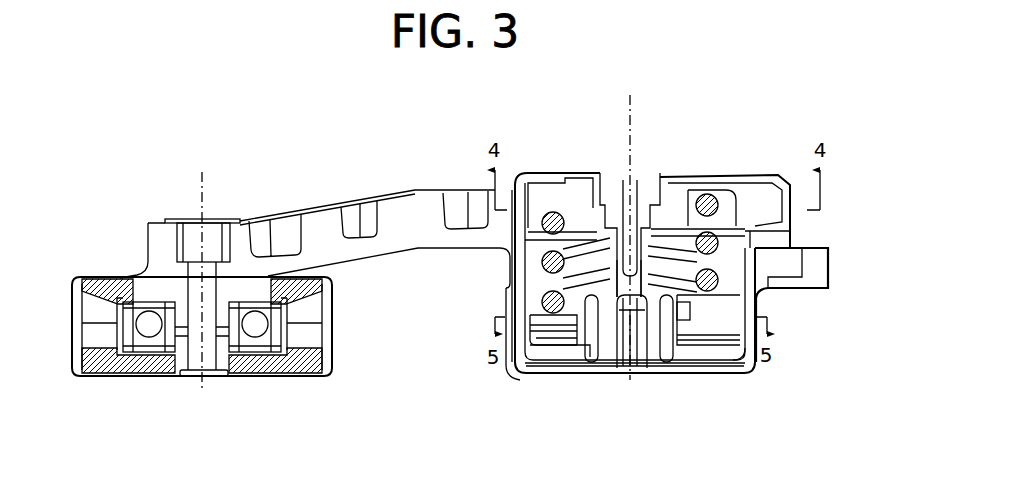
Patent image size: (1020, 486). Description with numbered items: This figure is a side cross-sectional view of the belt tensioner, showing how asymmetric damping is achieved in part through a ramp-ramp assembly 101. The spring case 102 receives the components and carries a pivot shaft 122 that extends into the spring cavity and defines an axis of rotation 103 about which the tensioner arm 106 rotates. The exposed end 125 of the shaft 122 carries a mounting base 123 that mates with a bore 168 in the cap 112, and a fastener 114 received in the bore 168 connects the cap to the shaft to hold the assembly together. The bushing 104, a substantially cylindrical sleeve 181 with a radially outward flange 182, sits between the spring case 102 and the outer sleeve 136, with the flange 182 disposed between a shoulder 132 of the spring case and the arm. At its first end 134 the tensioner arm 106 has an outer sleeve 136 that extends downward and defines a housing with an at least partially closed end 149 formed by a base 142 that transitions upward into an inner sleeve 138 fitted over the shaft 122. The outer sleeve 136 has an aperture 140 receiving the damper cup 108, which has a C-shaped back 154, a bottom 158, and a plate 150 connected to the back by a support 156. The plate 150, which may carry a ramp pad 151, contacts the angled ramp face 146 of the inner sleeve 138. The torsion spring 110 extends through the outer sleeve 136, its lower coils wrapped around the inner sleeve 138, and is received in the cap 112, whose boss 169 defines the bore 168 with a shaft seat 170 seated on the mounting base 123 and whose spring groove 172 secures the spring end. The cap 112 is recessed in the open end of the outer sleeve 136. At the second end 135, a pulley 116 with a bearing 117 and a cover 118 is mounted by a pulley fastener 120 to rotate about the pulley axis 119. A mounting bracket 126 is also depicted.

The ramp-ramp assembly 101 is at (562, 345).
The spring case 102 is at (545, 298).
The axis of rotation 103 is at (631, 100).
The bushing 104 is at (514, 262).
The tensioner arm 106 is at (392, 205).
The damper cup 108 is at (512, 373).
The torsion spring 110 is at (752, 297).
The cap 112 is at (727, 186).
The fastener 114 is at (638, 212).
The pulley 116 is at (85, 345).
The bearing 117 is at (124, 372).
The cover 118 is at (157, 350).
The pulley axis 119 is at (204, 194).
The pulley fastener 120 is at (197, 378).
The pivot shaft 122 is at (645, 340).
The mounting base 123 is at (615, 230).
The exposed end 125 is at (662, 200).
The mounting bracket 126 is at (818, 265).
The shoulder 132 is at (500, 255).
The first end 134 is at (503, 195).
The second end 135 is at (160, 226).
The outer sleeve 136 is at (745, 365).
The inner sleeve 138 is at (652, 345).
The aperture 140 is at (527, 295).
The base 142 is at (576, 345).
The ramp face 146 is at (622, 350).
The at least partially closed end 149 is at (718, 360).
The plate 150 is at (620, 340).
The ramp pad 151 is at (542, 262).
The back 154 is at (545, 335).
The support 156 is at (545, 340).
The bottom 158 is at (530, 350).
The bore 168 is at (560, 200).
The boss 169 is at (592, 218).
The shaft seat 170 is at (676, 188).
The spring groove 172 is at (732, 178).
The sleeve 181 is at (762, 288).
The flange 182 is at (772, 246).